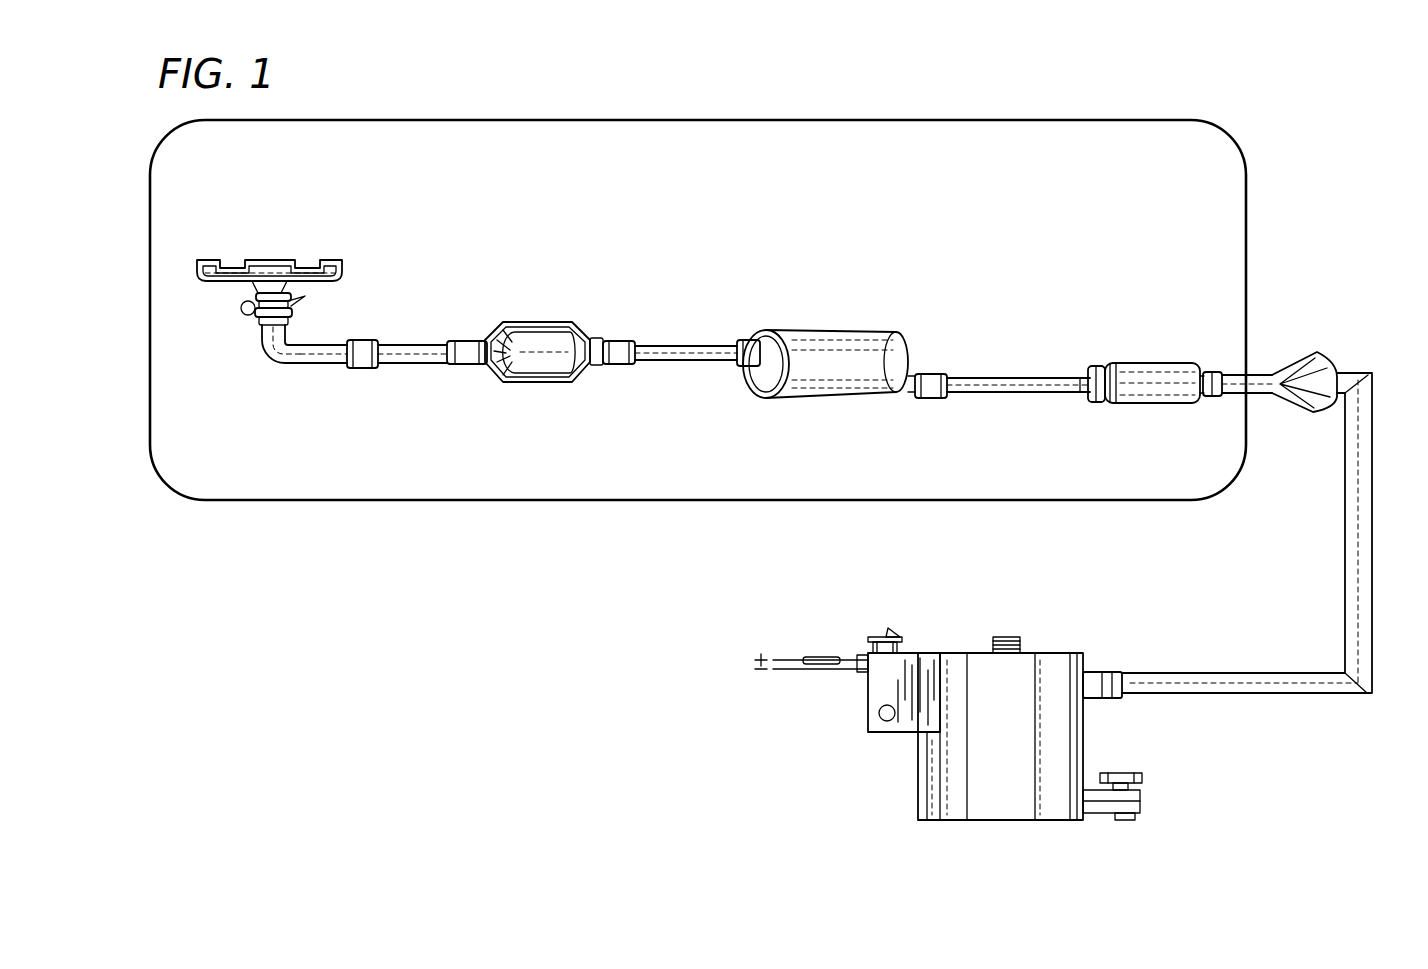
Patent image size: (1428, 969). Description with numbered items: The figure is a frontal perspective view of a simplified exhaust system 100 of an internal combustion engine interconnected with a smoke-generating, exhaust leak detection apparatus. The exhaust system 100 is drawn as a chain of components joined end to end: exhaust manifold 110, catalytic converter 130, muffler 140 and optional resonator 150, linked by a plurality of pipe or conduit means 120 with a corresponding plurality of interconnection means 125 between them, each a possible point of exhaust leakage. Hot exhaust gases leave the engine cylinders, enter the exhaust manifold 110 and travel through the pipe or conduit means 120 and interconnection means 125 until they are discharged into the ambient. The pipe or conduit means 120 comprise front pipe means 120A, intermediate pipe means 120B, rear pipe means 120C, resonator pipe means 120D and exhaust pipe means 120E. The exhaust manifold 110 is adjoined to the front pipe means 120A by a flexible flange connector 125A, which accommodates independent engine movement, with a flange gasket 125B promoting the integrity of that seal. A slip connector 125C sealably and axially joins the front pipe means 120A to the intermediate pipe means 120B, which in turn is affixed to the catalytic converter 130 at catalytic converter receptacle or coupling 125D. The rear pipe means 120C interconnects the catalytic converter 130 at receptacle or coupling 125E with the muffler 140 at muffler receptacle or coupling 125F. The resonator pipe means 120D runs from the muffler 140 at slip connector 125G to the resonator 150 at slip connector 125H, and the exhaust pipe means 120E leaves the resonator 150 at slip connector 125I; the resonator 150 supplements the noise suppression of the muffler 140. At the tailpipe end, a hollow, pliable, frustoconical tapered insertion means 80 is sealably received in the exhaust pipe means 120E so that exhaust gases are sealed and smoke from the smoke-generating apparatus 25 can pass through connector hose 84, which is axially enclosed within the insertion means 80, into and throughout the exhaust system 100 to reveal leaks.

The exhaust system 100 is at (862, 130).
The exhaust manifold 110 is at (268, 255).
The flange connector 125A is at (250, 316).
The flange gasket 125B is at (290, 318).
The front pipe means 120A is at (300, 360).
The plurality of interconnection means 125 is at (360, 368).
The plurality of pipe or conduit means 120 is at (407, 367).
The slip connector 125C is at (385, 340).
The intermediate pipe means 120B is at (437, 340).
The catalytic converter 130 is at (560, 322).
The catalytic converter receptacle or coupling 125D is at (480, 365).
The receptacle or coupling 125E is at (630, 338).
The rear pipe means 120C is at (708, 342).
The muffler receptacle or coupling 125F is at (738, 362).
The muffler 140 is at (853, 338).
The slip connector 125G is at (937, 385).
The resonator pipe means 120D is at (1000, 380).
The slip connector 125H is at (1100, 368).
The resonator 150 is at (1128, 392).
The slip connector 125I is at (1222, 372).
The exhaust pipe means 120E is at (1247, 387).
The tapered insertion means 80 is at (1318, 347).
The connector hose 84 is at (1343, 370).
The smoke-generating apparatus 25 is at (1043, 652).